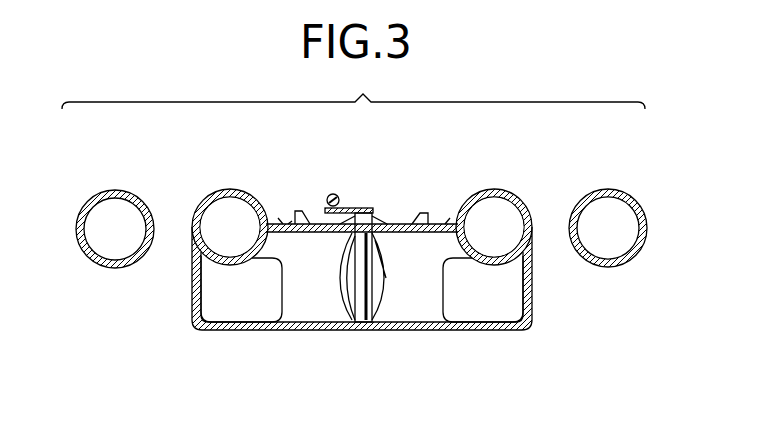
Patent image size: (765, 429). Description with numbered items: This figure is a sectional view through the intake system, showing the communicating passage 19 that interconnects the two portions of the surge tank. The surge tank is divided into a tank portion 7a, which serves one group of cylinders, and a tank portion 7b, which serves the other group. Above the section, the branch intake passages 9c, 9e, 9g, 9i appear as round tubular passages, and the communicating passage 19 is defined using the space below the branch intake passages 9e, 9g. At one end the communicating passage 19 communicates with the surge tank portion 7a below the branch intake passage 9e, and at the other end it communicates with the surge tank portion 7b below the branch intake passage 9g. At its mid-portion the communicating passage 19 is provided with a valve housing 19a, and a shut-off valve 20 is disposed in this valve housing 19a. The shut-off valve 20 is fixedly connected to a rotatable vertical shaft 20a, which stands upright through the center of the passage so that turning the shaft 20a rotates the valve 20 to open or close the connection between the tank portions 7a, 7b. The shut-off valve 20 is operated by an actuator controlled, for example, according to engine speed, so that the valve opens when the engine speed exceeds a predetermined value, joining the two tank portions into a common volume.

The tank portion 7a is at (243, 295).
The tank portion 7b is at (487, 299).
The branch intake passage 9c is at (117, 190).
The branch intake passage 9e is at (240, 190).
The branch intake passage 9g is at (485, 190).
The branch intake passage 9i is at (607, 189).
The communicating passage 19 is at (362, 265).
The valve housing 19a is at (380, 323).
The shut-off valve 20 is at (345, 326).
The rotatable vertical shaft 20a is at (393, 255).